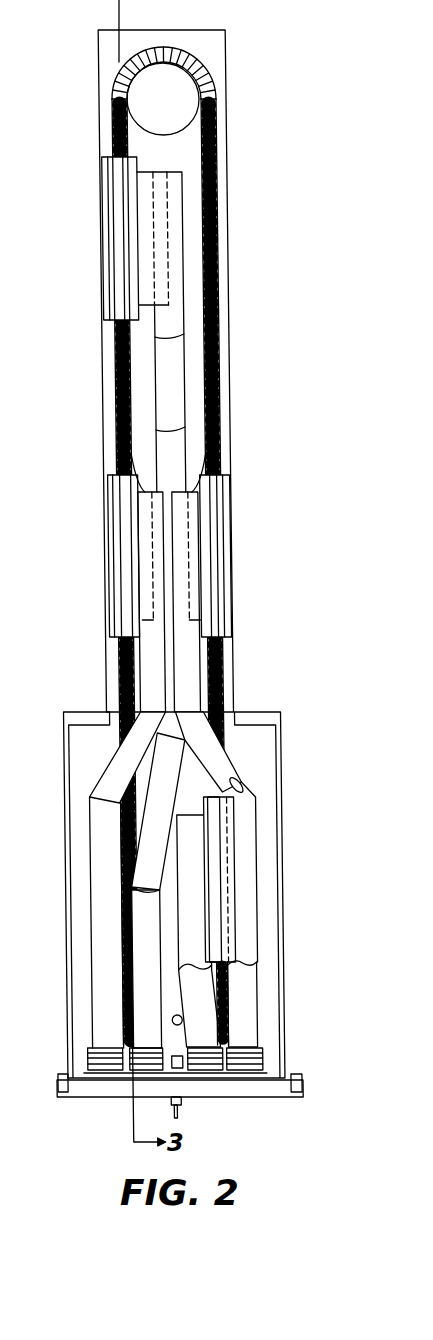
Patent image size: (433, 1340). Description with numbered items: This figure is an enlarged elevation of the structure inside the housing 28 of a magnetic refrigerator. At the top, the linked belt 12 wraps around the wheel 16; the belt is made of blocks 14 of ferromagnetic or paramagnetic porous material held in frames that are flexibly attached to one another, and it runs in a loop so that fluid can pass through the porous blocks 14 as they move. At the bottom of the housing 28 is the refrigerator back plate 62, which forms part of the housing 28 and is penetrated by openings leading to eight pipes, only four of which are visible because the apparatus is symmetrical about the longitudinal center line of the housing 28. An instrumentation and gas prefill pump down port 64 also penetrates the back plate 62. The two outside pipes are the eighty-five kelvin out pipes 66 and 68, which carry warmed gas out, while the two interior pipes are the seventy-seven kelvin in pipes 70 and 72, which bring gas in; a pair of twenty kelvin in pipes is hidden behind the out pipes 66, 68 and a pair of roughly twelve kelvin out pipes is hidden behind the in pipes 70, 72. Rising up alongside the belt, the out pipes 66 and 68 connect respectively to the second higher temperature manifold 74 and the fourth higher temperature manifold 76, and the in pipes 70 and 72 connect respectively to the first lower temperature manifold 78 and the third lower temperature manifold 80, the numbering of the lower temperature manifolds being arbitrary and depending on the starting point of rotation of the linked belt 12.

The linked belt 12 is at (213, 135).
The blocks 14 is at (213, 115).
The wheel 16 is at (210, 90).
The housing 28 is at (287, 1058).
The refrigerator back plate 62 is at (260, 1087).
The instrumentation and gas prefill pump down port 64 is at (178, 1112).
The 85K out pipe 66 is at (110, 960).
The 85K out pipe 68 is at (250, 1025).
The 77K in pipe 70 is at (143, 987).
The 77K in pipe 72 is at (200, 997).
The second higher temperature manifold 74 is at (123, 450).
The fourth higher temperature manifold 76 is at (213, 450).
The first lower temperature manifold 78 is at (147, 220).
The third lower temperature manifold 80 is at (220, 872).